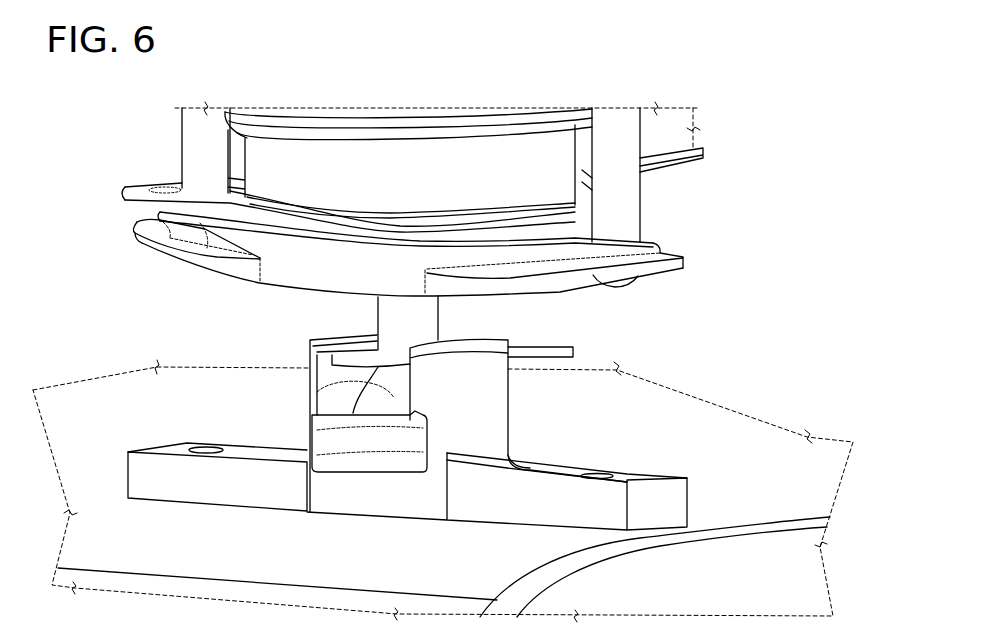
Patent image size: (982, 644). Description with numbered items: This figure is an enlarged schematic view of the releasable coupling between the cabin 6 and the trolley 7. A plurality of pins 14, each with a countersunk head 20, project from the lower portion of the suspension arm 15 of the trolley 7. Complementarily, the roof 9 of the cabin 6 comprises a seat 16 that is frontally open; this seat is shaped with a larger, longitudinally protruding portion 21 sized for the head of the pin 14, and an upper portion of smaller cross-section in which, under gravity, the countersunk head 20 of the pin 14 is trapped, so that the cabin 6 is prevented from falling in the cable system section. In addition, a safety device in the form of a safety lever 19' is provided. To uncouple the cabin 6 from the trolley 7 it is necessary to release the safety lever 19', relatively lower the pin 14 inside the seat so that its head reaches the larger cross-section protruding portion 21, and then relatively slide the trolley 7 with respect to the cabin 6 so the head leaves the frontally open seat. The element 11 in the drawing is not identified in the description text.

The cabin 6 is at (716, 380).
The trolley 7 is at (512, 102).
The roof 9 is at (720, 467).
The receiving housing 11 is at (598, 344).
The pin 14 is at (387, 407).
The suspension arm 15 is at (362, 160).
The seat 16 is at (405, 392).
The safety lever 19' is at (402, 275).
The countersunk head 20 is at (320, 393).
The protruding portion 21 is at (375, 412).